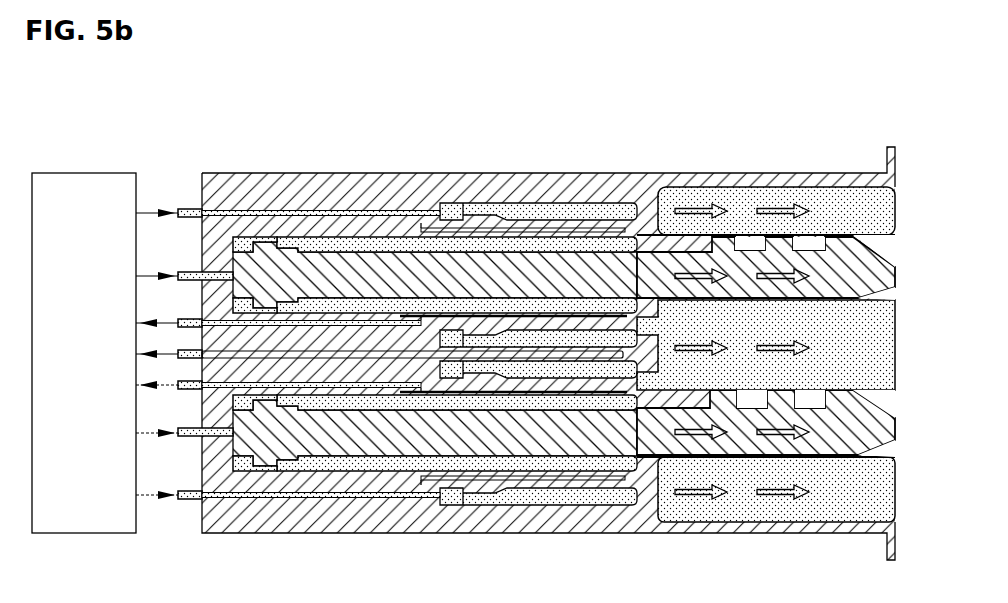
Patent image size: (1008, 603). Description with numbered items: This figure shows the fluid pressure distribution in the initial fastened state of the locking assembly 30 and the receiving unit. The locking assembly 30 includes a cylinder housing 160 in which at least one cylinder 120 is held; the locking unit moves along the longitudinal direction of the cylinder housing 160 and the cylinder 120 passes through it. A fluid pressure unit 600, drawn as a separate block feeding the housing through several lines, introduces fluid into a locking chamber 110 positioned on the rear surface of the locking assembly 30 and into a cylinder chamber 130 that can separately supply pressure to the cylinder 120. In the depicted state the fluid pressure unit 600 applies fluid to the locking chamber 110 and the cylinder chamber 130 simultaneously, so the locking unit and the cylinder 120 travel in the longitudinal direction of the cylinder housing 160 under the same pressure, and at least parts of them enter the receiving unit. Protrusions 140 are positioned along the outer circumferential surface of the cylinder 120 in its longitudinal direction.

The locking assembly 30 is at (479, 96).
The locking chamber 110 is at (452, 337).
The cylinder 120 is at (367, 267).
The cylinder chamber 130 is at (247, 305).
The protrusion 140 is at (840, 240).
The cylinder housing 160 is at (558, 160).
The fluid pressure unit 600 is at (88, 173).